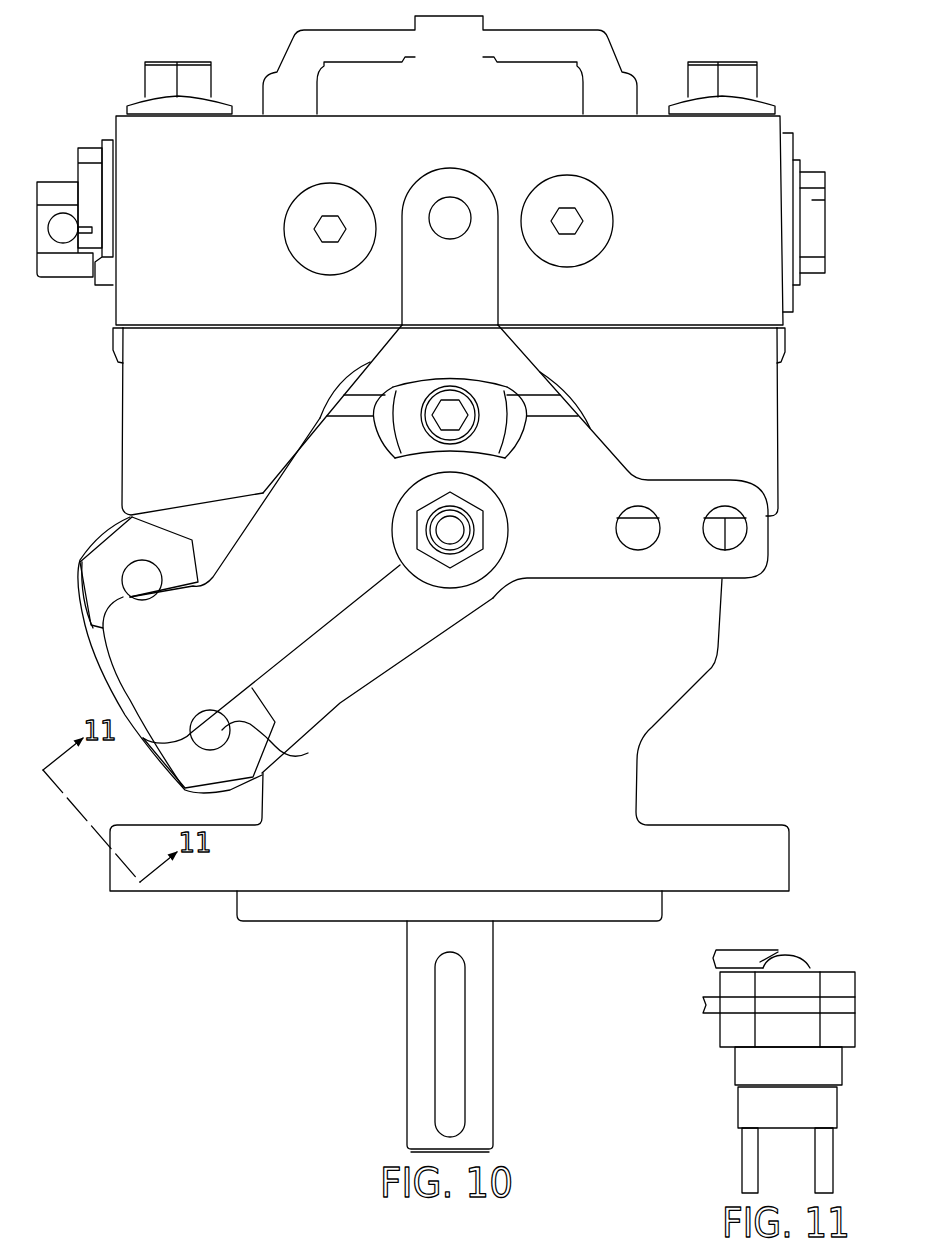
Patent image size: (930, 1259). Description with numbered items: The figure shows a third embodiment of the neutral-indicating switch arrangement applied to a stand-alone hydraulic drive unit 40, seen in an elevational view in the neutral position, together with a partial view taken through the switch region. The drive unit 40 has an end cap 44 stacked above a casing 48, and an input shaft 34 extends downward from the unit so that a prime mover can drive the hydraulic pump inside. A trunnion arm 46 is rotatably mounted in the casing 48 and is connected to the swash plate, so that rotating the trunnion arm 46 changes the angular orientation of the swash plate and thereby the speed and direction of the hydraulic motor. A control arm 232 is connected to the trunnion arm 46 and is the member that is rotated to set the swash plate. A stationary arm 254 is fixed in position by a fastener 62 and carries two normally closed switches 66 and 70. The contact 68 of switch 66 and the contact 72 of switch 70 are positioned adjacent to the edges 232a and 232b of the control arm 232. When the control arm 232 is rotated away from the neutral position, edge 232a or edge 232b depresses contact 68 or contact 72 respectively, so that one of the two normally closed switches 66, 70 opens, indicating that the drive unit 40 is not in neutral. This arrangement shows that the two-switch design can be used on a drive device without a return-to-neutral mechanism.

In FIG. 10, the hydraulic drive unit 40 is at (803, 68).
In FIG. 10, the end cap 44 is at (176, 228).
In FIG. 10, the casing 48 is at (190, 412).
In FIG. 10, the control arm 232 is at (428, 308).
In FIG. 11, the control arm 232 is at (738, 946).
In FIG. 10, the fastener 62 is at (425, 400).
In FIG. 10, the trunnion arm 46 is at (450, 530).
In FIG. 10, the stationary arm 254 is at (305, 682).
In FIG. 11, the stationary arm 254 is at (738, 1005).
In FIG. 10, the switch 66 is at (117, 557).
In FIG. 10, the contact 68 is at (132, 580).
In FIG. 10, the edge 232a is at (146, 598).
In FIG. 10, the edge 232b is at (207, 722).
In FIG. 11, the edge 232b is at (771, 964).
In FIG. 10, the switch 70 is at (221, 775).
In FIG. 11, the switch 70 is at (771, 1122).
In FIG. 10, the contact 72 is at (282, 745).
In FIG. 11, the contact 72 is at (793, 963).
In FIG. 10, the input shaft 34 is at (493, 1035).